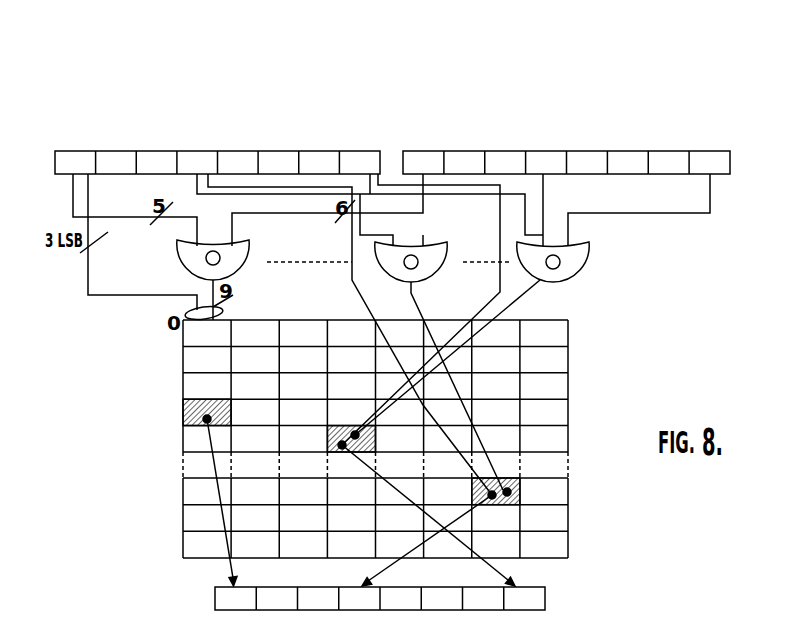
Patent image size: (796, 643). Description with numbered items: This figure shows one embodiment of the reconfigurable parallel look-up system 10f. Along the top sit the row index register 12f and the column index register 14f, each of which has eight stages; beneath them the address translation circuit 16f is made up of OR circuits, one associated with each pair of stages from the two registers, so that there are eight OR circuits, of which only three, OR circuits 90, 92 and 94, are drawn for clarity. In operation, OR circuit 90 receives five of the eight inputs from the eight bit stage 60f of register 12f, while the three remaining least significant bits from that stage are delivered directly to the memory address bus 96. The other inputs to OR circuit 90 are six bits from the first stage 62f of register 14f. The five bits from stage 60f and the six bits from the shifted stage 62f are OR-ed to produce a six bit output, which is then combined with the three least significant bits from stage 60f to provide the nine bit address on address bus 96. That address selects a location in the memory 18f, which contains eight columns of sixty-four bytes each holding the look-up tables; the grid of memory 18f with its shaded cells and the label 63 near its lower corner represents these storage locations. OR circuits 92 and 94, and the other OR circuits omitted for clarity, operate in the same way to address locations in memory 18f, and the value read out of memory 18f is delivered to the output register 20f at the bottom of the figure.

The reconfigurable parallel look-up system 10f is at (689, 44).
The row index register 12f is at (240, 152).
The column index register 14f is at (628, 151).
The address translation circuit 16f is at (712, 213).
The memory 18f is at (568, 337).
The output register 20f is at (546, 600).
The eight bit stage 60f is at (77, 151).
The first stage 62f is at (425, 151).
The memory array row 63 is at (166, 560).
The OR circuit 90 is at (250, 256).
The OR circuit 92 is at (437, 272).
The OR circuit 94 is at (573, 272).
The memory address bus 96 is at (186, 315).